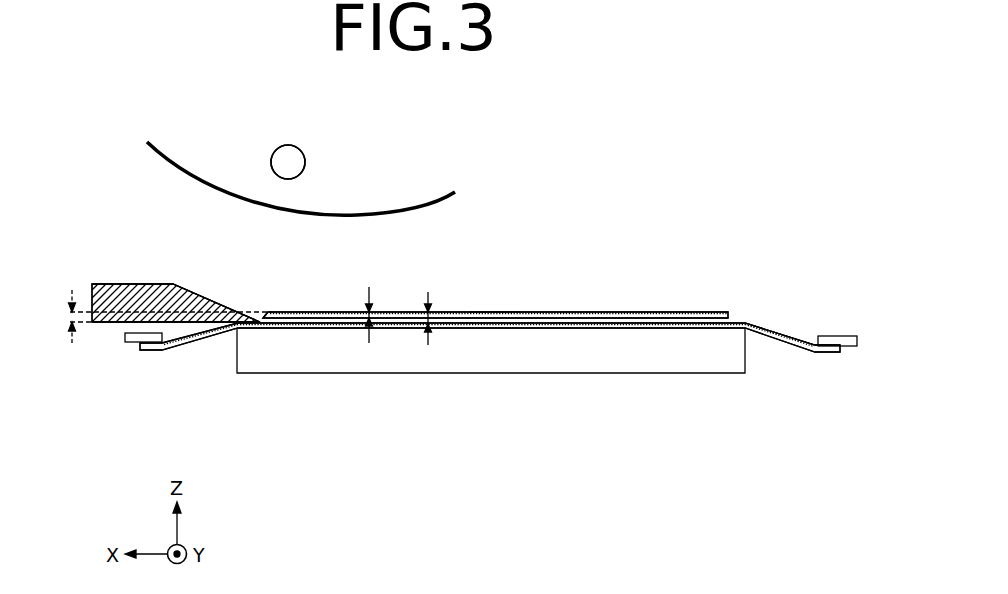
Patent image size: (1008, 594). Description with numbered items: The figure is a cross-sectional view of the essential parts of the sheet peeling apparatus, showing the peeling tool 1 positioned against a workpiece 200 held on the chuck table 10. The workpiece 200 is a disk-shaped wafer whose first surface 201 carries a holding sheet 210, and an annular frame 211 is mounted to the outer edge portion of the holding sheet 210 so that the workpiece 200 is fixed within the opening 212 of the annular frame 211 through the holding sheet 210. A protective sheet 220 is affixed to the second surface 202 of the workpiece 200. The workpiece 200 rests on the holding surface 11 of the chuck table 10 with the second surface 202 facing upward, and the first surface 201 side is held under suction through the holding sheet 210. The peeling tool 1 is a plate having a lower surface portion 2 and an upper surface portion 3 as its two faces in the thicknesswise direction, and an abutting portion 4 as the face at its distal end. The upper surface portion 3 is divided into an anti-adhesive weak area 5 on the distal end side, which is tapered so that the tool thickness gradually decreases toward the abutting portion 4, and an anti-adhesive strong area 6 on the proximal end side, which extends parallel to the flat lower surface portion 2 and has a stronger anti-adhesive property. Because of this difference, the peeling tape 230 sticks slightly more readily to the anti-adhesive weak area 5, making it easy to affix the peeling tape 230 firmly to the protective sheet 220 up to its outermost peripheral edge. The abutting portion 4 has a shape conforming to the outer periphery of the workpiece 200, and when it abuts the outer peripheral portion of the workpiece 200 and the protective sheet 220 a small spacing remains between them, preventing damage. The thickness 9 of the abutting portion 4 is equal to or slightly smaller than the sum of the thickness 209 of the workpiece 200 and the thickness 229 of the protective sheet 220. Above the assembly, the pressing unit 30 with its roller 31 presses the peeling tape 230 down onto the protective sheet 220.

The peeling tool 1 is at (110, 284).
The lower surface portion 2 is at (100, 325).
The upper surface portion 3 is at (233, 242).
The abutting portion 4 is at (275, 312).
The anti-adhesive weak area 5 is at (207, 289).
The anti-adhesive strong area 6 is at (160, 283).
The thickness 9 is at (68, 310).
The chuck table 10 is at (540, 352).
The holding surface 11 is at (493, 312).
The pressing unit 30 is at (287, 153).
The roller 31 is at (288, 162).
The workpiece 200 is at (729, 319).
The first surface 201 is at (693, 330).
The second surface 202 is at (697, 318).
The thickness 209 is at (416, 312).
The holding sheet 210 is at (633, 330).
The annular frame 211 is at (130, 347).
The opening 212 is at (812, 342).
The protective sheet 220 is at (633, 312).
The thickness 229 is at (361, 312).
The peeling tape 230 is at (380, 212).